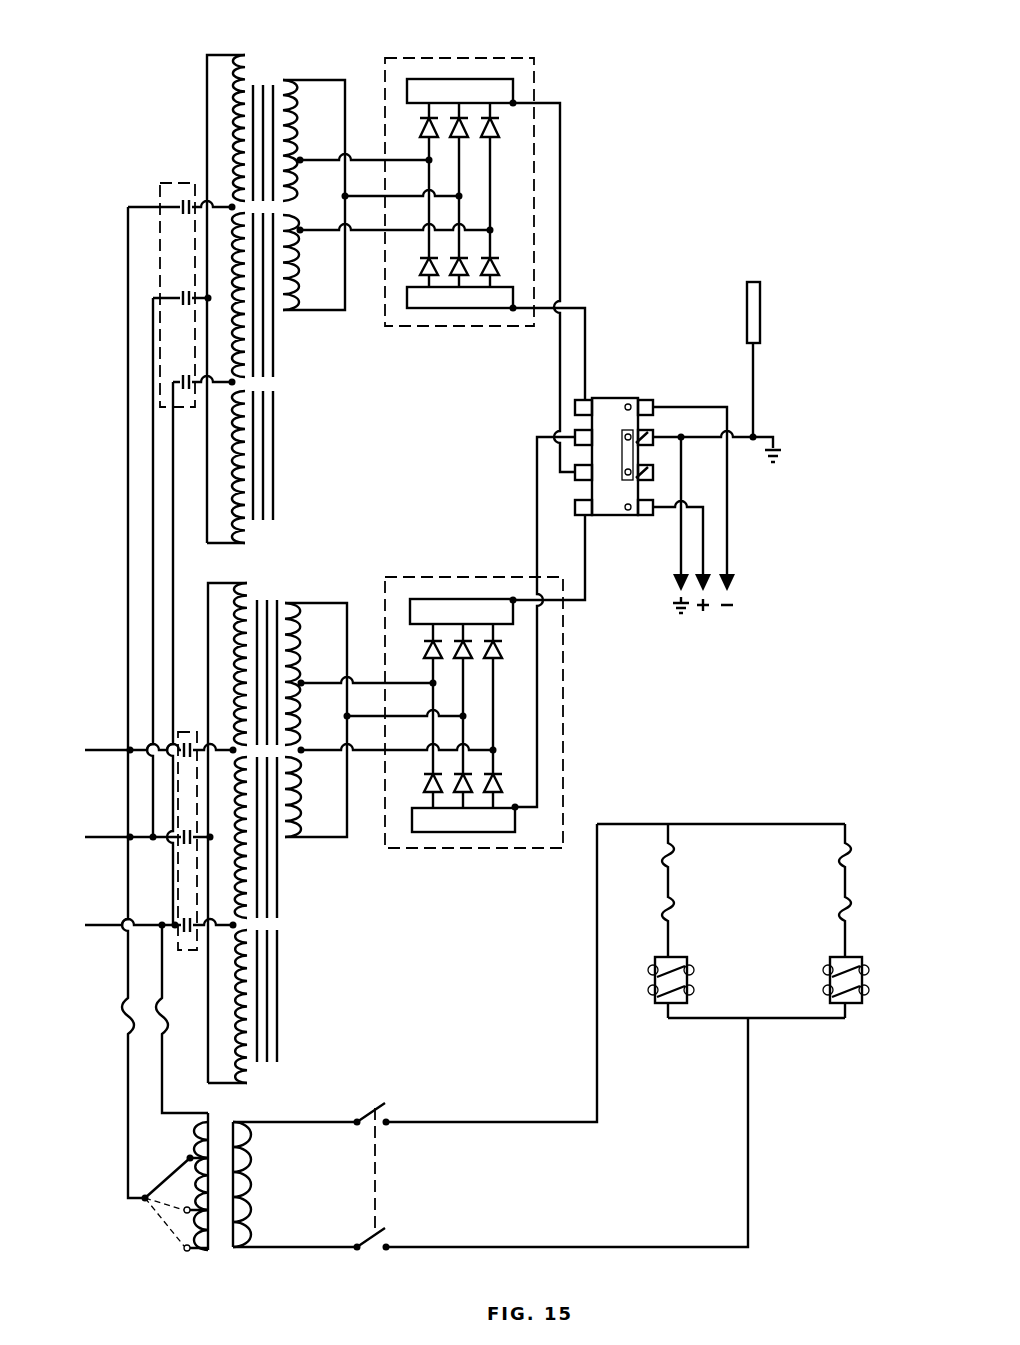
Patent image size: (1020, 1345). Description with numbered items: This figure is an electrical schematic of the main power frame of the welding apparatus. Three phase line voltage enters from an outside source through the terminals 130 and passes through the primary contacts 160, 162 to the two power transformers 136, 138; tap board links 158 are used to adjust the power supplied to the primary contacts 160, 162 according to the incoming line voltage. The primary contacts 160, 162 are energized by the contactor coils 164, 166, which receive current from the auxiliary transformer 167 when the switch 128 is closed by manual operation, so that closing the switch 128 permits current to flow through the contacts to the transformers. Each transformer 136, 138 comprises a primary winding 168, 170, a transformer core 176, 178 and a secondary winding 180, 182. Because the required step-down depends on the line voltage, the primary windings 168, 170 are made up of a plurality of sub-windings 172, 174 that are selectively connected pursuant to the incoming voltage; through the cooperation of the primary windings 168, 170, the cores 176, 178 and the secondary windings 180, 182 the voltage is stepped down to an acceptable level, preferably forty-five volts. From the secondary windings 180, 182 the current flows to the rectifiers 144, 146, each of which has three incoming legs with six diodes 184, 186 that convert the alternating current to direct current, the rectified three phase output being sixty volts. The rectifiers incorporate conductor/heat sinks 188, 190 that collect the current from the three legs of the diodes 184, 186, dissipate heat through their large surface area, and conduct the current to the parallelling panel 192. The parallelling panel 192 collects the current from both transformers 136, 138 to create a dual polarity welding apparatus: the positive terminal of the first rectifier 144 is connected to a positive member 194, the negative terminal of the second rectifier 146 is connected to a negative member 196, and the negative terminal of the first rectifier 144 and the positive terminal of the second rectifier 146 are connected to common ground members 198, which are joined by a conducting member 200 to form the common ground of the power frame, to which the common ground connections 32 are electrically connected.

The common ground connections 32 is at (761, 300).
The switch 128 is at (387, 1173).
The terminals 130 is at (85, 750).
The transformer 136 is at (333, 943).
The transformer 138 is at (328, 396).
The rectifier 144 is at (563, 725).
The rectifier 146 is at (534, 168).
The tap board links 158 is at (145, 1198).
The primary contacts 160 is at (197, 950).
The primary contacts 162 is at (180, 183).
The contactor coil 164 is at (674, 957).
The contactor coil 166 is at (839, 957).
The auxiliary transformer 167 is at (223, 1253).
The primary winding 168 is at (250, 581).
The primary winding 170 is at (240, 48).
The sub-windings 172 is at (245, 875).
The sub-windings 174 is at (243, 324).
The transformer core 176 is at (278, 1035).
The transformer core 178 is at (275, 491).
The secondary winding 180 is at (322, 845).
The secondary winding 182 is at (290, 78).
The diodes 184 is at (497, 648).
The diodes 186 is at (490, 128).
The conductor/heat sink 188 is at (498, 599).
The conductor/heat sink 190 is at (500, 92).
The parallelling panel 192 is at (608, 393).
The positive member 194 is at (647, 518).
The negative member 196 is at (647, 403).
The common ground members 198 is at (649, 438).
The conducting member 200 is at (622, 464).